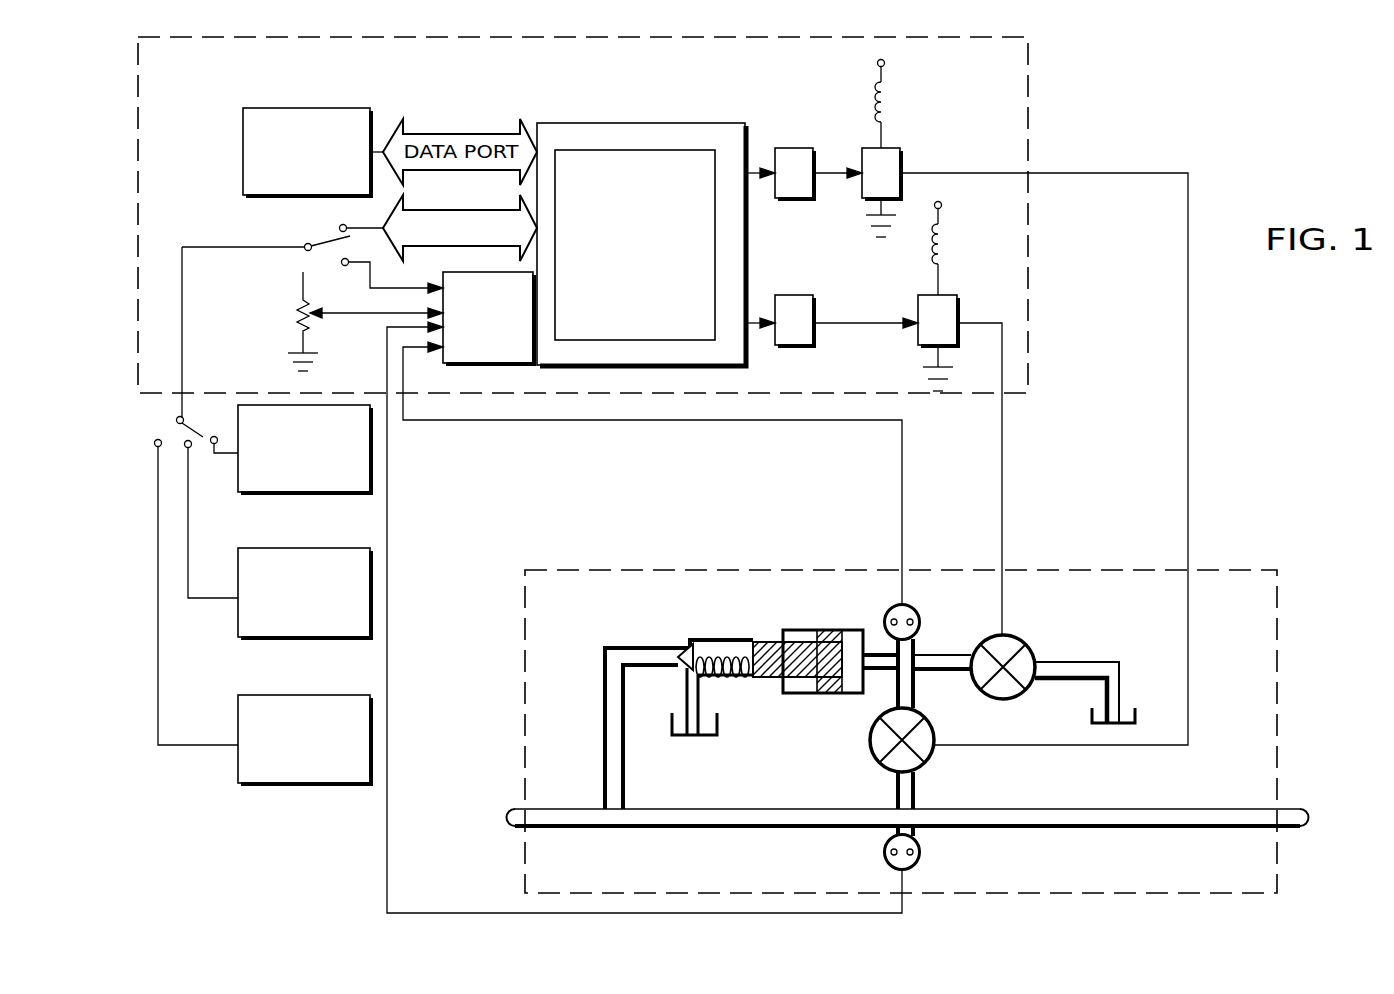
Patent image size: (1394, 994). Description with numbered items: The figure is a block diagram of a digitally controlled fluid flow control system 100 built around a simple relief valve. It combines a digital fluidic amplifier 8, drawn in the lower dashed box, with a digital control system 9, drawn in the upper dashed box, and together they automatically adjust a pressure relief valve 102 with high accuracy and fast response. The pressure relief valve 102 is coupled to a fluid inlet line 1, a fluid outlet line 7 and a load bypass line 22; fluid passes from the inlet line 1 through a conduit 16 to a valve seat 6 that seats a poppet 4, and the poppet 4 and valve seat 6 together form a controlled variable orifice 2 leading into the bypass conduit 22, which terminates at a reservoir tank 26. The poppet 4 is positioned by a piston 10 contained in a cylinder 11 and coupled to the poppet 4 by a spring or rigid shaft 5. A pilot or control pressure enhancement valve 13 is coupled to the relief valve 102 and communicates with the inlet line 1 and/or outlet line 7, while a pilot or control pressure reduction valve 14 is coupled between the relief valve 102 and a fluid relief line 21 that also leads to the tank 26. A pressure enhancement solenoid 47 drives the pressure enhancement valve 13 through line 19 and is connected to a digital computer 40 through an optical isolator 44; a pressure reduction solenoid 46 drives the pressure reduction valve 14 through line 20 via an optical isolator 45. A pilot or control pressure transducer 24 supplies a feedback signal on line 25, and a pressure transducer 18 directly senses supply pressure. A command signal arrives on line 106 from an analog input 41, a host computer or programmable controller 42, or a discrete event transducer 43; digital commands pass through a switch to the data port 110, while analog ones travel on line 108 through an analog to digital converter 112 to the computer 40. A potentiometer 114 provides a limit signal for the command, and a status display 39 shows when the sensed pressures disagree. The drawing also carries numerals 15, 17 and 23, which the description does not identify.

The fluid inlet line 1 is at (509, 818).
The controlled variable orifice 2 is at (677, 669).
The poppet 4 is at (694, 640).
The spring or rigid shaft 5 is at (735, 648).
The valve seat 6 is at (675, 649).
The fluid outlet line 7 is at (1311, 822).
The digital fluidic amplifier 8 is at (1211, 899).
The digital control system 9 is at (1031, 141).
The piston 10 is at (833, 696).
The cylinder 11 is at (852, 628).
The pilot or control pressure enhancement valve 13 is at (922, 707).
The pilot or control pressure reduction valve 14 is at (1069, 628).
The main line 15 is at (622, 826).
The conduit 16 is at (601, 785).
The connecting line 17 is at (918, 797).
The pressure transducer 18 is at (924, 870).
The line 19 is at (1114, 752).
The line 20 is at (1006, 486).
The fluid relief line 21 is at (1097, 651).
The load bypass line 22 is at (708, 696).
The sensor signal line 23 is at (878, 920).
The pilot or control pressure transducer 24 is at (921, 616).
The line 25 is at (900, 520).
The reservoir tank 26 is at (697, 740).
The status display 39 is at (283, 107).
The digital computer 40 is at (660, 123).
The analog input 41 is at (213, 460).
The host computer or programmable controller 42 is at (217, 606).
The discrete event transducer 43 is at (232, 781).
The optical isolator 44 is at (778, 160).
The optical isolator 45 is at (792, 306).
The pressure reduction solenoid 46 is at (952, 308).
The pressure enhancement solenoid 47 is at (893, 162).
The digitally controlled fluid flow control system 100 is at (1222, 408).
The pressure relief valve 102 is at (764, 747).
The line 106 is at (276, 246).
The line 108 is at (396, 287).
The data port 110 is at (416, 211).
The analog to digital converter 112 is at (507, 365).
The potentiometer 114 is at (290, 316).